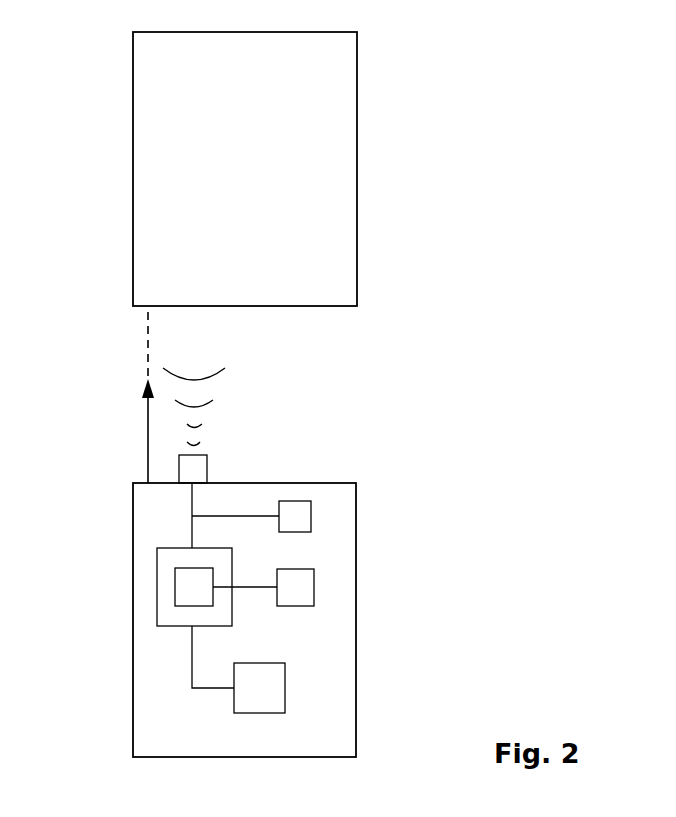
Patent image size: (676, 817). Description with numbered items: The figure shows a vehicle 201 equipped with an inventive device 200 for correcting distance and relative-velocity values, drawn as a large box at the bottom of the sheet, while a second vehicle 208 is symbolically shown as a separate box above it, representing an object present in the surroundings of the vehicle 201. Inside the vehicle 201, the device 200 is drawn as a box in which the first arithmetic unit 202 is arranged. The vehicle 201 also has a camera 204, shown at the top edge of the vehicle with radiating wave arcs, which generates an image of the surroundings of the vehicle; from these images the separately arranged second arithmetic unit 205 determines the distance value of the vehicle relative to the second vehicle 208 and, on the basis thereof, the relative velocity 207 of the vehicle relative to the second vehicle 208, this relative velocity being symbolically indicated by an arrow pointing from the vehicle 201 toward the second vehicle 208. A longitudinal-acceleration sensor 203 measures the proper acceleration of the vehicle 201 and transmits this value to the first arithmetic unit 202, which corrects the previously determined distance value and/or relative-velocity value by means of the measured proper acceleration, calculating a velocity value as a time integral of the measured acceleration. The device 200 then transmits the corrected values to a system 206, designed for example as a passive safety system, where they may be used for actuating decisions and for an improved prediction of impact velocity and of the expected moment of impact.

The second vehicle 208 is at (307, 159).
The vehicle 201 is at (327, 559).
The relative velocity 207 is at (148, 430).
The camera 204 is at (207, 458).
The device 200 is at (157, 620).
The first arithmetic unit 202 is at (175, 573).
The second arithmetic unit 205 is at (311, 525).
The longitudinal-acceleration sensor 203 is at (314, 590).
The system 206 is at (285, 687).